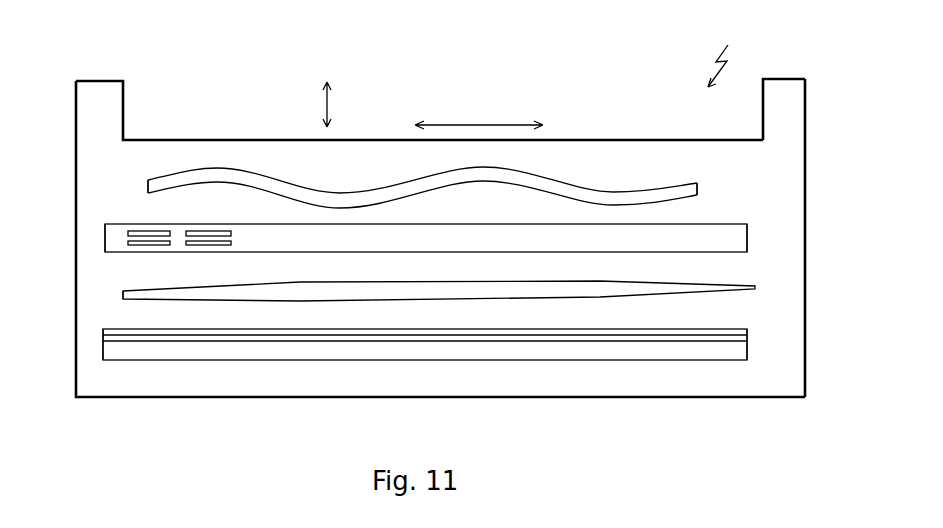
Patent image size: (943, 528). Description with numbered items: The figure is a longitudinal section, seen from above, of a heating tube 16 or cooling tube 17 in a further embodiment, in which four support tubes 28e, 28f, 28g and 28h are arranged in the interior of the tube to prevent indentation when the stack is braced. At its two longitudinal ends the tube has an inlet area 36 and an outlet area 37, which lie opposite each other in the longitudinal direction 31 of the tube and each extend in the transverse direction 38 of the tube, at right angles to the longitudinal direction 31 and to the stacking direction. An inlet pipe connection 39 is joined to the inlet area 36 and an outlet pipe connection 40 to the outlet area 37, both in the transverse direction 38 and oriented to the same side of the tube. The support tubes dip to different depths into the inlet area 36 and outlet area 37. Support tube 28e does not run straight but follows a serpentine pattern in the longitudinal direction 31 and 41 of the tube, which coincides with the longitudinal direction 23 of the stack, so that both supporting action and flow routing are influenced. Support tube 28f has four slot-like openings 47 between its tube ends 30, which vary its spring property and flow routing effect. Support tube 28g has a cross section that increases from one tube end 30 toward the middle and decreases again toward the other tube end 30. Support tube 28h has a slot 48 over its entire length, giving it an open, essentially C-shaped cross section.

The heating tube 16 is at (553, 98).
The cooling tube 17 is at (353, 176).
The longitudinal direction of the stack 23 is at (479, 107).
The longitudinal direction of the tube 31 is at (479, 107).
The longitudinal direction of the respective tube 41 is at (478, 122).
The support tube 28e is at (632, 188).
The support tube 28f is at (426, 219).
The support tube 28g is at (732, 282).
The support tube 28h is at (425, 345).
The tube ends 30 is at (148, 185).
The inlet area 36 is at (93, 283).
The outlet area 37 is at (787, 208).
The transverse direction of the tube 38 is at (338, 100).
The inlet pipe connection 39 is at (125, 108).
The outlet pipe connection 40 is at (763, 104).
The opening 47 is at (203, 242).
The slot 48 is at (222, 343).